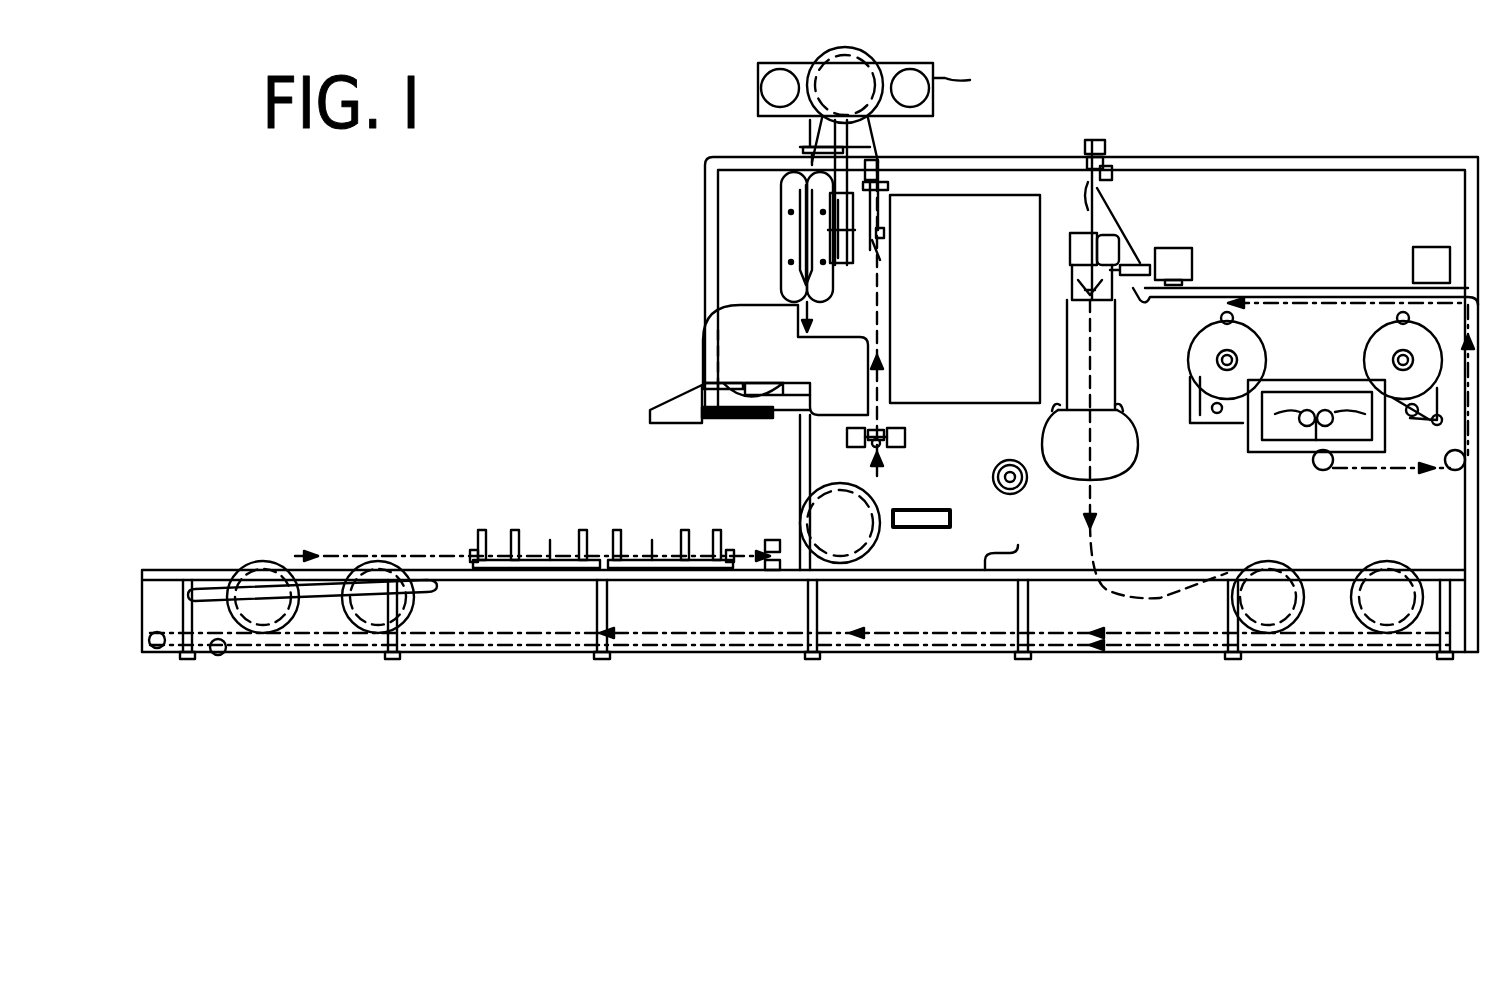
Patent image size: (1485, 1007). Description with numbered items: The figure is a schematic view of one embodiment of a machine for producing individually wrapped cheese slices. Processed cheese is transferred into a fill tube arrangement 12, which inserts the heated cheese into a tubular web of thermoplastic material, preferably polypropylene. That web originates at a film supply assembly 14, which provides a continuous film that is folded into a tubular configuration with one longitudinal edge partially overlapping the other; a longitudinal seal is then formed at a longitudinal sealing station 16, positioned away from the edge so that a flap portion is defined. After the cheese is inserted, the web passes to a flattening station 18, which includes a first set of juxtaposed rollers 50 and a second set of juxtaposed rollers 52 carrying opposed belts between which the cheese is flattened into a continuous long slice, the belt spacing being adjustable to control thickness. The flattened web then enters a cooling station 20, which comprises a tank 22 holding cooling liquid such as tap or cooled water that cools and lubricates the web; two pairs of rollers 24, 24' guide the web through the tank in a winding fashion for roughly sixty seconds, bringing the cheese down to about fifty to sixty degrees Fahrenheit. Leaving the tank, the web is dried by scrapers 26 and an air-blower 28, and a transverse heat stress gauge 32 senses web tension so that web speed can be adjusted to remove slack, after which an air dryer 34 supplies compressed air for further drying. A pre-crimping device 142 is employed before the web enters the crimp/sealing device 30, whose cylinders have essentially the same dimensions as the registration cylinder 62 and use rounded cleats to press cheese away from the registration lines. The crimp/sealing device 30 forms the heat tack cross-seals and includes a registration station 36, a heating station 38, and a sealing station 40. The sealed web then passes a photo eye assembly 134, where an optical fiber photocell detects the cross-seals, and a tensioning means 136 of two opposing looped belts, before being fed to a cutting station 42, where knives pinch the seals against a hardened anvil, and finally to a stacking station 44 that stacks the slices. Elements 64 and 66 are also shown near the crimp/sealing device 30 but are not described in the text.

The fill tube arrangement 12 is at (1090, 222).
The film supply assembly 14 is at (1330, 345).
The longitudinal sealing station 16 is at (1070, 252).
The flattening station 18 is at (1118, 360).
The cooling station 20 is at (908, 620).
The tank 22 is at (1015, 544).
The rollers 24 is at (378, 631).
The conveyor roller 24' is at (805, 631).
The scrapers 26 is at (598, 535).
The air-blower 28 is at (772, 538).
The crimp/sealing device 30 is at (862, 15).
The transverse heat stress gauge 32 is at (862, 537).
The air dryer 34 is at (905, 437).
The registration station 36 is at (975, 84).
The heating station 38 is at (870, 62).
The sealing station 40 is at (760, 86).
The cutting station 42 is at (838, 378).
The stacking station 44 is at (748, 427).
The first set of juxtaposed rollers 50 is at (1068, 295).
The second set of juxtaposed rollers 52 is at (1112, 305).
The registration cylinder 62 is at (920, 72).
The supply lines 64 is at (822, 66).
The bracket 66 is at (768, 68).
The photo eye assembly 134 is at (800, 147).
The tensioning means 136 is at (784, 250).
The pre-crimping device 142 is at (880, 152).